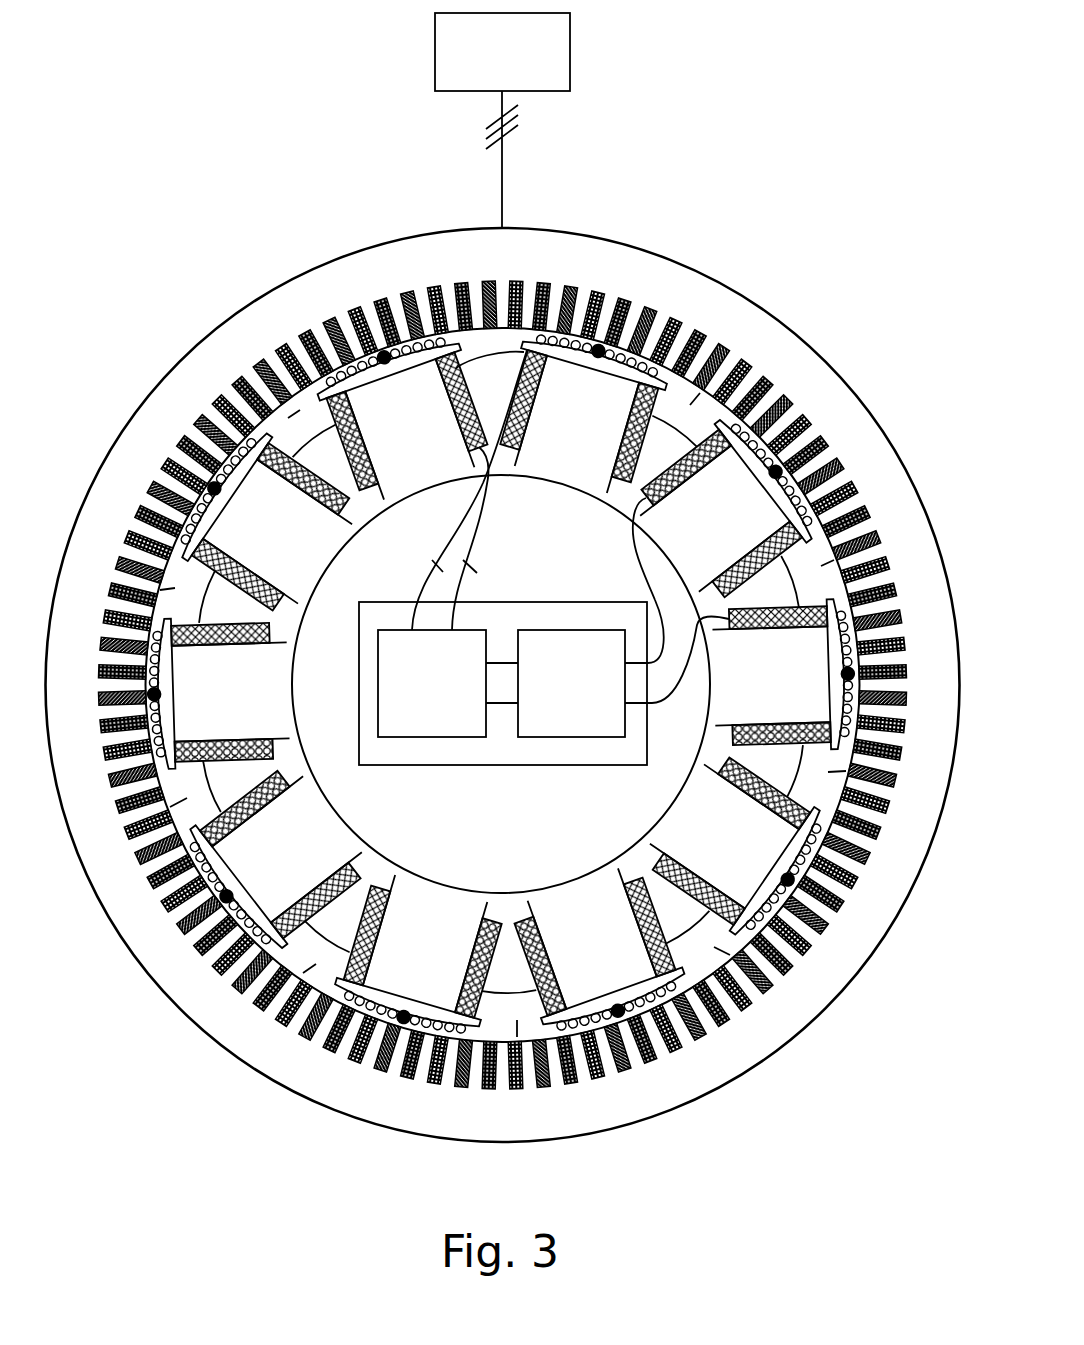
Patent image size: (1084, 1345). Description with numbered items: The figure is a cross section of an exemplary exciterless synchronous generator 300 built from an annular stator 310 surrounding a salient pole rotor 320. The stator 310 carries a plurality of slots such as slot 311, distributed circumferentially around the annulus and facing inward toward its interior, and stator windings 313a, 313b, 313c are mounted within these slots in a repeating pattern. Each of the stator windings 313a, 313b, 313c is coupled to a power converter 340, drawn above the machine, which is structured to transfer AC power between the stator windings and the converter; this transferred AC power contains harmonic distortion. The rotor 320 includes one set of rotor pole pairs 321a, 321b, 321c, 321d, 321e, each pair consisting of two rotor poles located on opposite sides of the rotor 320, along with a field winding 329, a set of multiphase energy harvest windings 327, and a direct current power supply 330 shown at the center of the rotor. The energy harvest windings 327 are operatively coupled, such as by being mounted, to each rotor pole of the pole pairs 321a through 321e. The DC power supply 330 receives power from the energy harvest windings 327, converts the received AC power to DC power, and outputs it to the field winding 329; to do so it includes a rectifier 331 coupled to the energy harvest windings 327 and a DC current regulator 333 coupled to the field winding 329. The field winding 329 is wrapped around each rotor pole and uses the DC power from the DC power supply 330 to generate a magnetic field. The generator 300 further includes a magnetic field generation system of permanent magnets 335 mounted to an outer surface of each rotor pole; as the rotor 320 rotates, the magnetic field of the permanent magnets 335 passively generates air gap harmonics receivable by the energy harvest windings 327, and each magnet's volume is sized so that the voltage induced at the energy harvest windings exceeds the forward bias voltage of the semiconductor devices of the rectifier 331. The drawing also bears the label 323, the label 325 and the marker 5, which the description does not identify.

The synchronous generator 300 is at (503, 685).
The stator 310 is at (264, 294).
The slot 311 is at (352, 330).
The stator winding 313a is at (379, 302).
The stator winding 313b is at (405, 292).
The stator winding 313c is at (514, 281).
The rotor 320 is at (507, 715).
The rotor pole pair 321a is at (385, 463).
The rotor pole pair 321b is at (542, 463).
The rotor pole pair 321c is at (692, 521).
The rotor pole pair 321d is at (756, 685).
The rotor pole pair 321e is at (710, 853).
The pole shoe 323 is at (362, 392).
The rotor core 325 is at (390, 525).
The energy harvest windings 327 is at (466, 516).
The field winding 329 is at (642, 578).
The DC power supply 330 is at (503, 671).
The rectifier 331 is at (422, 737).
The DC current regulator 333 is at (558, 737).
The permanent magnets 335 is at (862, 672).
The power converter 340 is at (502, 120).
The section indicator 5 is at (503, 715).